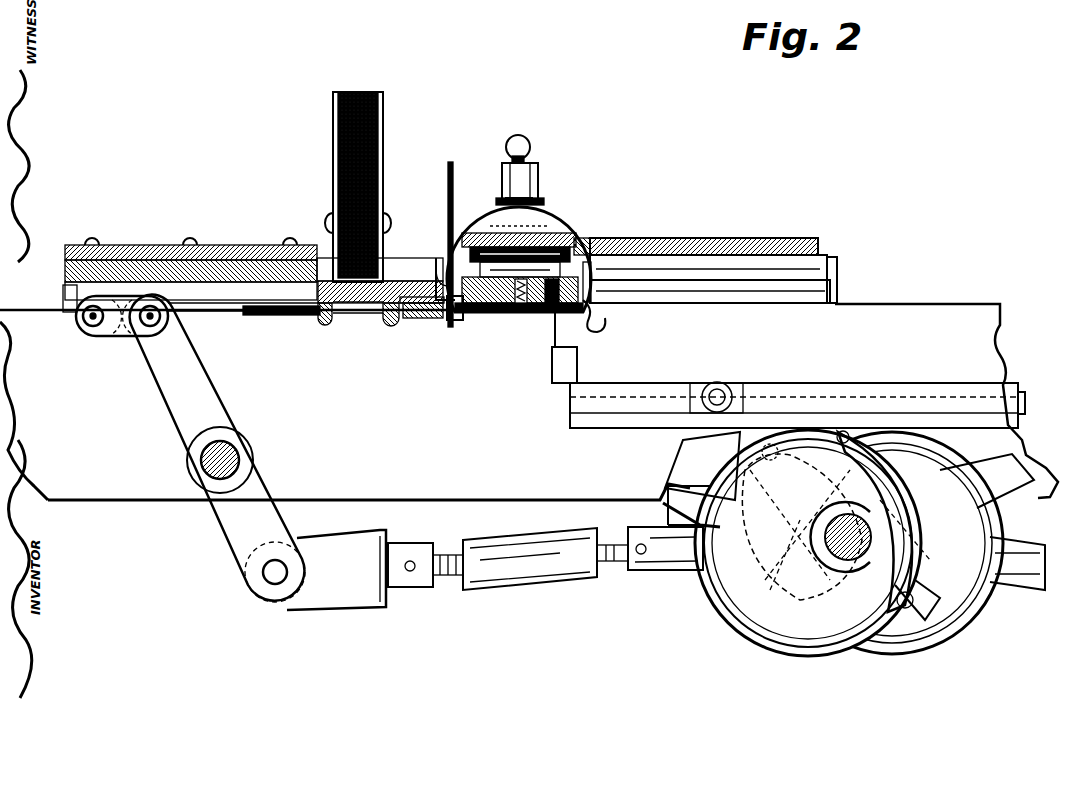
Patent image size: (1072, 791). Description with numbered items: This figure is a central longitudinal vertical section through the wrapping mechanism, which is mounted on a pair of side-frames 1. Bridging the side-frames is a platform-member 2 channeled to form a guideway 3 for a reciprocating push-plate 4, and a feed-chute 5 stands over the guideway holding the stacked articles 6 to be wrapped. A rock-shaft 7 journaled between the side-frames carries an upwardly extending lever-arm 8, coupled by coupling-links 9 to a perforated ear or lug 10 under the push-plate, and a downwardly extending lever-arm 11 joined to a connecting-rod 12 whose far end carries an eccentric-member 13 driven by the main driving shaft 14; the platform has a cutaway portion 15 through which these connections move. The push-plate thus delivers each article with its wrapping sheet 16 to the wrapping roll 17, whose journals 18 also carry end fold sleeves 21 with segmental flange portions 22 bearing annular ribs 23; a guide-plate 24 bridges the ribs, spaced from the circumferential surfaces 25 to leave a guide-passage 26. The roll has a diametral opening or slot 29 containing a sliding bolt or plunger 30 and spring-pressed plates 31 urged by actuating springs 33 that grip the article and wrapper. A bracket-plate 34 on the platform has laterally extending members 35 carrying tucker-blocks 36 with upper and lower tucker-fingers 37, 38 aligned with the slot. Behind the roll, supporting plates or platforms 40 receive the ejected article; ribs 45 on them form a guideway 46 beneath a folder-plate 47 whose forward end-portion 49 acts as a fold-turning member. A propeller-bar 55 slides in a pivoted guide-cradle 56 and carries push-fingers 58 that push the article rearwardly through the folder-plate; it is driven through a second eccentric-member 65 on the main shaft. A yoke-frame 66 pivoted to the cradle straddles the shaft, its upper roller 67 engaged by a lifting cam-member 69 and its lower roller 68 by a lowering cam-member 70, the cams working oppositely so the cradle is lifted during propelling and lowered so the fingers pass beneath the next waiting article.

The side-frames 1 is at (935, 316).
The platform-member 2 is at (350, 318).
The guideway 3 is at (322, 316).
The push-plate 4 is at (213, 272).
The feed-chute 5 is at (384, 170).
The articles 6 is at (333, 240).
The rock-shaft 7 is at (240, 458).
The upwardly extending lever-arm 8 is at (202, 385).
The coupling-links 9 is at (120, 330).
The perforated ear or lug 10 is at (72, 318).
The downwardly extending lever-arm 11 is at (232, 528).
The connecting-rod 12 is at (506, 590).
The eccentric-member 13 is at (712, 612).
The main driving shaft 14 is at (848, 510).
The open space or cutaway portion 15 is at (205, 298).
The wrapping sheet 16 is at (450, 170).
The wrapping roll 17 is at (494, 313).
The journals 18 is at (510, 313).
The end fold sleeves 21 is at (525, 313).
The segmental flange portions 22 is at (560, 210).
The annular rib 23 is at (565, 225).
The guide-plate 24 is at (498, 195).
The circumferential surfaces 25 is at (548, 200).
The guide-passage 26 is at (500, 200).
The opening or slot 29 is at (598, 240).
The sliding bolt or plunger 30 is at (474, 313).
The spring-pressed plate 31 is at (548, 313).
The actuating springs 33 is at (556, 313).
The bracket-plate 34 is at (421, 320).
The laterally extending members 35 is at (447, 322).
The tucker-blocks 36 is at (440, 264).
The upper tucker-fingers 37 is at (447, 257).
The tucker-fingers 38 is at (456, 320).
The supporting plates or platforms 40 is at (672, 302).
The longitudinally extending ribs 45 is at (837, 258).
The guideway 46 is at (675, 270).
The folder-plate 47 is at (740, 240).
The forward end-portion 49 is at (600, 240).
The propeller-bar 55 is at (1024, 400).
The guide-cradle 56 is at (940, 395).
The push-fingers 58 is at (604, 330).
The eccentric-member 65 is at (985, 620).
The yoke-frame 66 is at (728, 390).
The upper roller 67 is at (770, 465).
The lower roller 68 is at (925, 600).
The lifting cam-member 69 is at (905, 450).
The lowering cam-member 70 is at (930, 503).